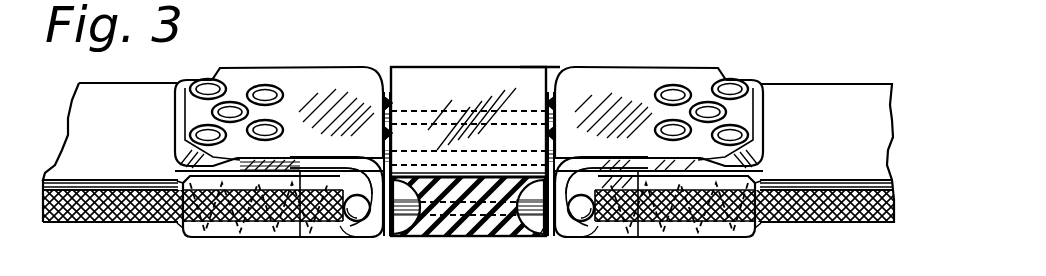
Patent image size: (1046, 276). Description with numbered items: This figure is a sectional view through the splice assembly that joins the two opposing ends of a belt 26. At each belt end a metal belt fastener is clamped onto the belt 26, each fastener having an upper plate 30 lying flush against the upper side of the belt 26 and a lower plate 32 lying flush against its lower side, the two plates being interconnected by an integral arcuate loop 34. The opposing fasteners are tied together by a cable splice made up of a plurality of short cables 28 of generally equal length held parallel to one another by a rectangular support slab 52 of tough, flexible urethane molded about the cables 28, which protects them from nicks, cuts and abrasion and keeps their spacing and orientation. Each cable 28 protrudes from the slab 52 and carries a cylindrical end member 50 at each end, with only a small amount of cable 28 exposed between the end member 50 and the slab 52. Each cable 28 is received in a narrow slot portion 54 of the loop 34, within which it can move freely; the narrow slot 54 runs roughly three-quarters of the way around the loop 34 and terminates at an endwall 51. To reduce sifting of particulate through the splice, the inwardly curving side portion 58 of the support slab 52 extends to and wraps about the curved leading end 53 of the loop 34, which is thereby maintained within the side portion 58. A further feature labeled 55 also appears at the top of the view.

The belt 26 is at (117, 104).
The short cable 28 is at (417, 233).
The upper plate 30 is at (300, 80).
The lower plate 32 is at (305, 238).
The loop 34 is at (384, 90).
The end member 50 is at (352, 222).
The endwall 51 is at (396, 102).
The support slab 52 is at (478, 78).
The leading end 53 is at (354, 172).
The narrow slot portion 54 is at (378, 140).
The top wall 55 is at (540, 33).
The side portion 58 is at (546, 233).